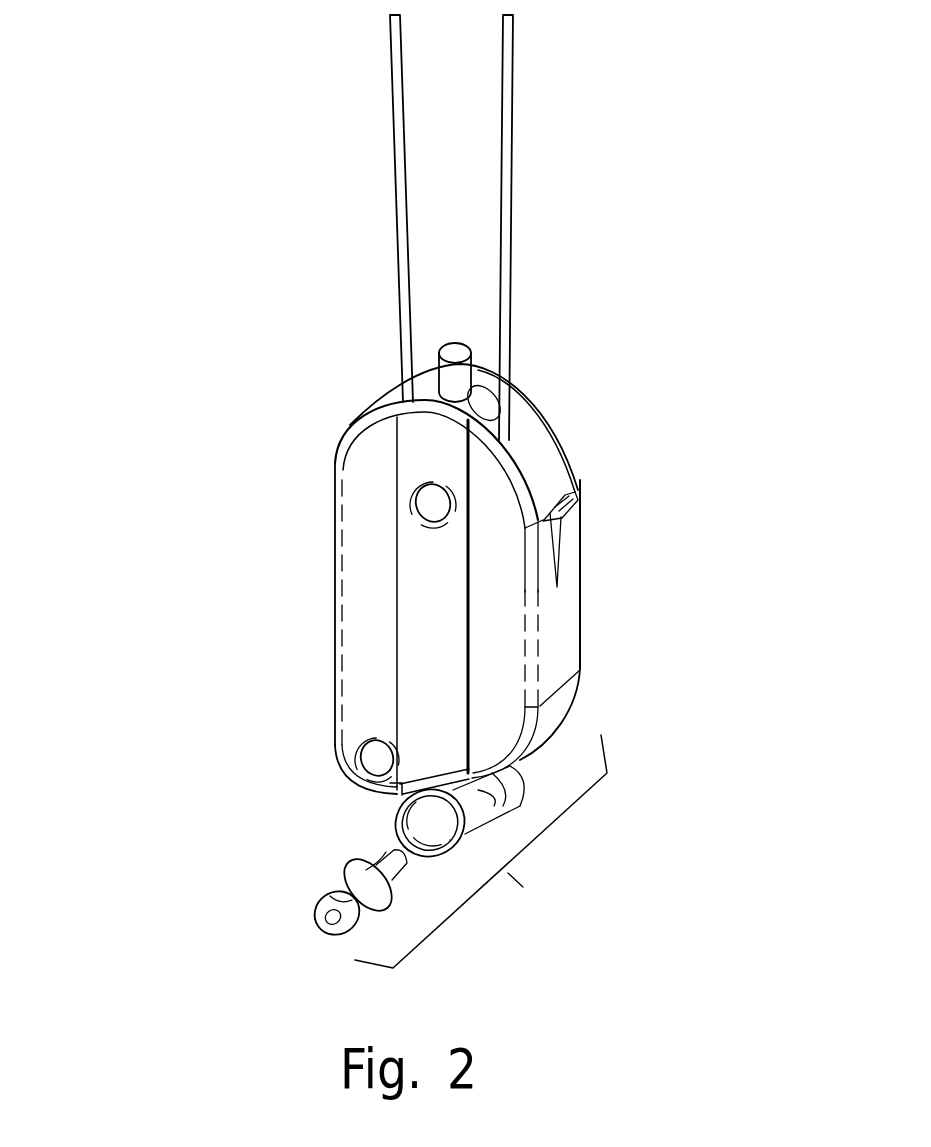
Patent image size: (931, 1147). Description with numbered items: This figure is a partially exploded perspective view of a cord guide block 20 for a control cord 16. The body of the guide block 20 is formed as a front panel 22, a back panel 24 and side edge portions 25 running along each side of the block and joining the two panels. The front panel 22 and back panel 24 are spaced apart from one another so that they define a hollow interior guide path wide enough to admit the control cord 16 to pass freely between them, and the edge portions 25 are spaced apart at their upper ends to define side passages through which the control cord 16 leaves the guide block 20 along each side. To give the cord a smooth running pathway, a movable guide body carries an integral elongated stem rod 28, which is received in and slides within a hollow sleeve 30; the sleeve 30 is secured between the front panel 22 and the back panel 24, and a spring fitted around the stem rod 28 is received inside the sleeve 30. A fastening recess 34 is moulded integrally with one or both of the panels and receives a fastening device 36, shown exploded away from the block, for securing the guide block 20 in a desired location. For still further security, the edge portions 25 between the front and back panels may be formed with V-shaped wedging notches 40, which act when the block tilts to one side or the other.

The control cord 16 is at (510, 172).
The guide block 20 is at (225, 688).
The front panel 22 is at (372, 537).
The back panel 24 is at (565, 433).
The side edge portions 25 is at (570, 640).
The stem rod 28 is at (455, 352).
The hollow sleeve 30 is at (440, 383).
The fastening recess 34 is at (448, 822).
The fastening device 36 is at (323, 896).
The wedging notches 40 is at (558, 538).